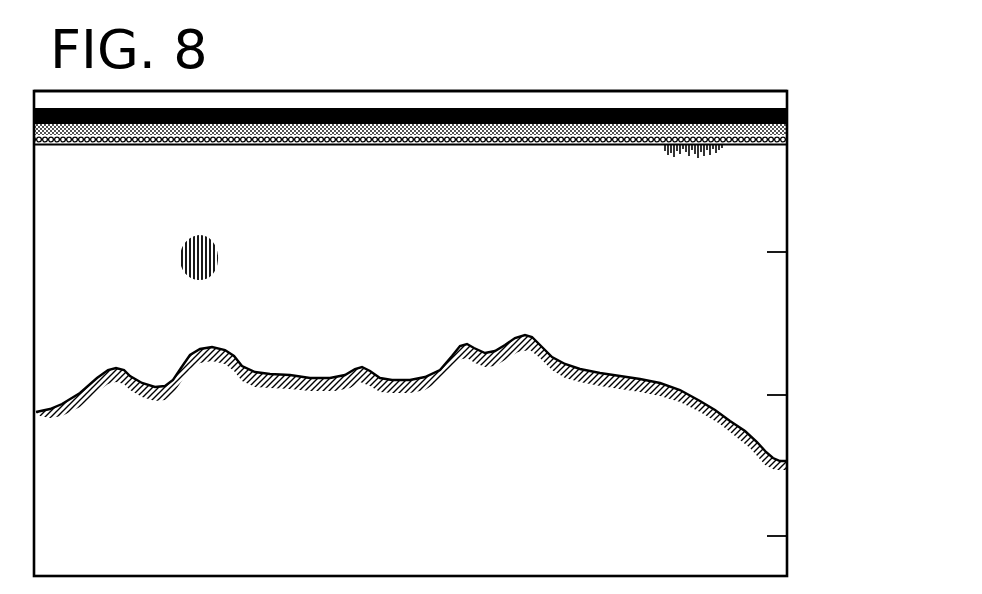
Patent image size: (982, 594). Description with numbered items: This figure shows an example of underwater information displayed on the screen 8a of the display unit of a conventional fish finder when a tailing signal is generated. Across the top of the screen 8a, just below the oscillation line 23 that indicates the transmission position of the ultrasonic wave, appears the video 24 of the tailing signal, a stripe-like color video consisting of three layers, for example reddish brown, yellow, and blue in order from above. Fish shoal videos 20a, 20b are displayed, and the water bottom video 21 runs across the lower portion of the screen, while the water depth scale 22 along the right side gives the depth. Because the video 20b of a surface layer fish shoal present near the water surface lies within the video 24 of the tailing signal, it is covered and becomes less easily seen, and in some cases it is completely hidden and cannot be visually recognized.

The screen 8a is at (340, 91).
The oscillation line 23 is at (585, 108).
The video of the tailing signal 24 is at (444, 90).
The surface layer fish shoal video 20b is at (680, 147).
The fish shoal video 20a is at (220, 271).
The water bottom video 21 is at (402, 378).
The water depth scale 22 is at (775, 389).